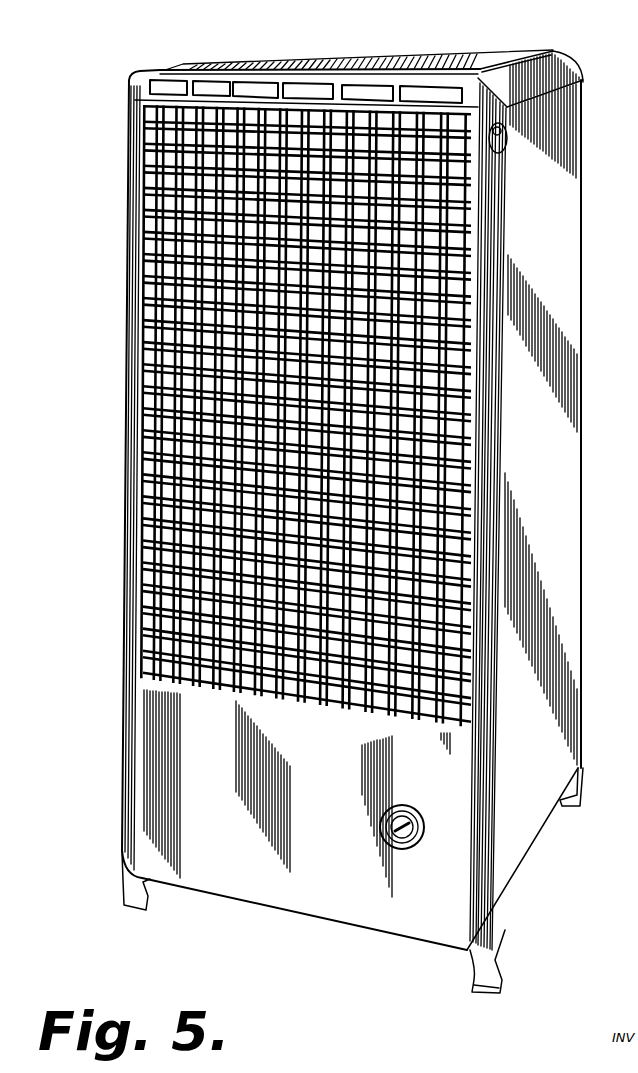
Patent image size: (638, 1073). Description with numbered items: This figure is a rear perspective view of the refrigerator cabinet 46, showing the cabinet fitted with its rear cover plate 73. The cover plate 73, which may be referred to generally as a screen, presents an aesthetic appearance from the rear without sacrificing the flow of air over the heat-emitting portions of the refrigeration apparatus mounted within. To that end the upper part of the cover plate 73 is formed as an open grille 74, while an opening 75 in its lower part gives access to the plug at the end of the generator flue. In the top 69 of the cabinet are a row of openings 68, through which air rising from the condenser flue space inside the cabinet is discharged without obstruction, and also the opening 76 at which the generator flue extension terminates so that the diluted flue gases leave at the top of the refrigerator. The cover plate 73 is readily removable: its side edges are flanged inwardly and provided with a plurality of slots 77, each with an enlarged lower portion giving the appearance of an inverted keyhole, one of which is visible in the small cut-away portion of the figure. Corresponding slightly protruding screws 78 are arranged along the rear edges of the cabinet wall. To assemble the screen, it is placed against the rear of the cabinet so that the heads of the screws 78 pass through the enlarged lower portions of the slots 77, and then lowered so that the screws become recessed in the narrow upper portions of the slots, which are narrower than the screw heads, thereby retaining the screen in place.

The refrigerator cabinet 46 is at (583, 612).
The openings 68 is at (450, 73).
The top 69 is at (204, 64).
The rear cover plate 73 is at (257, 882).
The open grille 74 is at (148, 524).
The opening 75 is at (421, 840).
The opening 76 is at (493, 66).
The slots 77 is at (507, 144).
The screws 78 is at (500, 129).